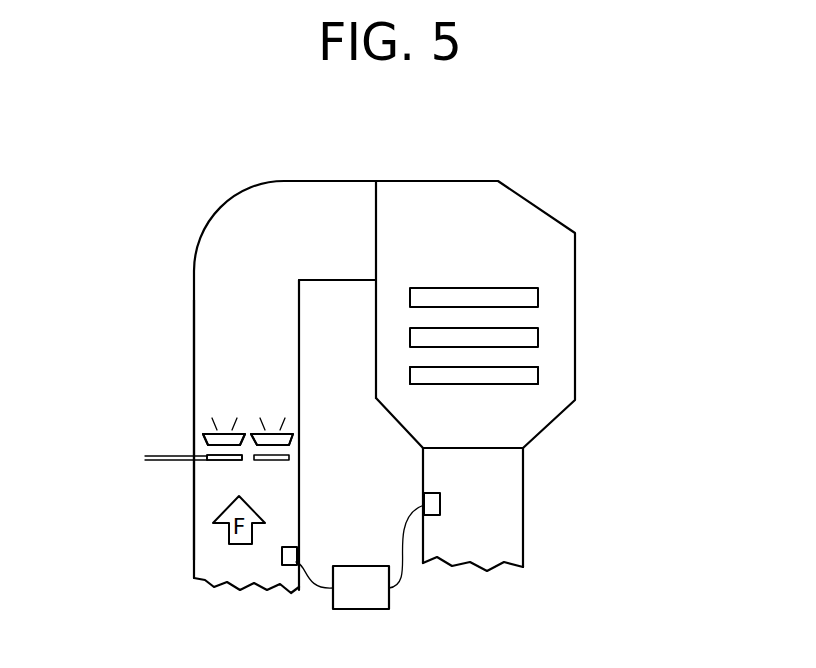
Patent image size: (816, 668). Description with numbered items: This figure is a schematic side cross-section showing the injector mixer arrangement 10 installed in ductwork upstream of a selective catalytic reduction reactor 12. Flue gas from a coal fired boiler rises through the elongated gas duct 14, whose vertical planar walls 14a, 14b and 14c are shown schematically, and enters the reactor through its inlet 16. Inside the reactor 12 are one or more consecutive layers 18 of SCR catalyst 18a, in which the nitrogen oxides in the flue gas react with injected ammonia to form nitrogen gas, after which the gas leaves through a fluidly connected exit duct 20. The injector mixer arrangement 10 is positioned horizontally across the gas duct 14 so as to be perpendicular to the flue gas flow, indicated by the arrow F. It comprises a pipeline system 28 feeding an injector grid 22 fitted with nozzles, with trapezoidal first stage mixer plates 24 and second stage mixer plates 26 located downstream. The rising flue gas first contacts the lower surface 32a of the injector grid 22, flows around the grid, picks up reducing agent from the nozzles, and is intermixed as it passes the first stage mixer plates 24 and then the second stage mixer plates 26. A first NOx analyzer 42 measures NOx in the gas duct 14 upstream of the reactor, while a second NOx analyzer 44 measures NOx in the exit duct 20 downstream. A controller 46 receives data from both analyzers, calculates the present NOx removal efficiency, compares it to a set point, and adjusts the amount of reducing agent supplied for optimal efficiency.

The injector mixer arrangement 10 is at (172, 432).
The selective catalytic reduction reactor 12 is at (587, 324).
The gas duct 14 is at (206, 288).
The longitudinal duct wall 14a is at (300, 364).
The longitudinal duct wall 14b is at (287, 318).
The vertical planar wall 14c is at (193, 376).
The inlet 16 is at (376, 217).
The layers of SCR catalyst 18 is at (538, 297).
The SCR catalyst 18a is at (509, 378).
The exit duct 20 is at (523, 490).
The injector grid 22 is at (289, 461).
The first stage mixer plates 24 is at (294, 440).
The second stage mixer plates 26 is at (285, 424).
The pipeline system 28 is at (165, 462).
The lower surface 32a is at (227, 462).
The first NOx analyzer 42 is at (297, 552).
The second NOx analyzer 44 is at (428, 493).
The controller 46 is at (347, 602).